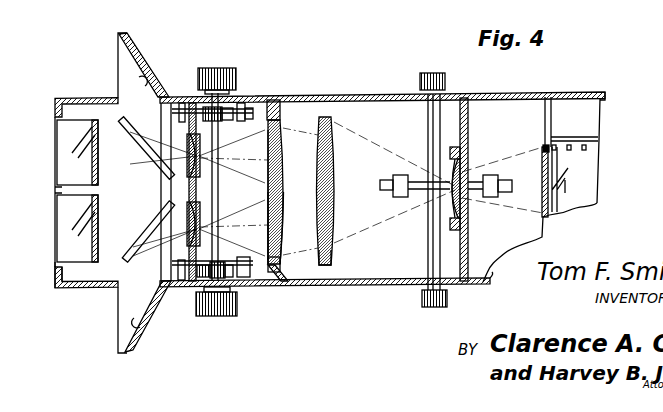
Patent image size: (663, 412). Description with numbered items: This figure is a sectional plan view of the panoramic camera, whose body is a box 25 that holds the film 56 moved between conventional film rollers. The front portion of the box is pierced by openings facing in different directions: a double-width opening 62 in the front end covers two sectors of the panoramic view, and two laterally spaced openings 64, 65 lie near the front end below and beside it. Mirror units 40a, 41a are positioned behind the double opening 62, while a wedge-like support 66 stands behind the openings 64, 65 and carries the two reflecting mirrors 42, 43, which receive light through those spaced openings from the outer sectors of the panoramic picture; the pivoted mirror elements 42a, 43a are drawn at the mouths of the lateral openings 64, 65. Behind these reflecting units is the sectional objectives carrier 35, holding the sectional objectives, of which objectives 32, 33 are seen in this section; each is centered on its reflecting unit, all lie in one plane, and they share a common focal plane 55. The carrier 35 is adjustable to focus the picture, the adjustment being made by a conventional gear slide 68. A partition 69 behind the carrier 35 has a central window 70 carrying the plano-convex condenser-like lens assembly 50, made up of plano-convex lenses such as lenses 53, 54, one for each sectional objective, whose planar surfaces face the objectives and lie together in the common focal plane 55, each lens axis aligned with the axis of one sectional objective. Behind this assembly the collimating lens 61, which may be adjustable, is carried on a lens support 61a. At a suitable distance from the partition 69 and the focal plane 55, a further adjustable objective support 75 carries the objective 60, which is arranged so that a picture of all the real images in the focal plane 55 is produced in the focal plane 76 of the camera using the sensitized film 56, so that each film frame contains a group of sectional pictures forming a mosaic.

The box 25 is at (349, 93).
The sectional objective 32 is at (198, 155).
The sectional objective 33 is at (198, 230).
The sectional objectives carrier 35 is at (193, 276).
The mirror unit 40a is at (68, 157).
The mirror unit 41a is at (68, 223).
The reflecting mirror 42 is at (132, 132).
The upper pivoted mirror 42a is at (143, 67).
The reflecting mirror 43 is at (136, 246).
The lower pivoted mirror 43a is at (135, 348).
The plano-convex condenser-like lens assembly 50 is at (284, 122).
The plano-convex lens 53 is at (278, 157).
The plano-convex lens 54 is at (279, 232).
The common focal plane 55 is at (268, 195).
The film 56 is at (586, 190).
The objective 60 is at (462, 176).
The collimating lens 61 is at (334, 167).
The lens support 61a is at (331, 259).
The opening 62 is at (61, 265).
The opening 64 is at (127, 74).
The opening 65 is at (127, 316).
The wedge-like support 66 is at (167, 97).
The gear slide 68 is at (216, 270).
The partition 69 is at (278, 270).
The central opening or window 70 is at (279, 256).
The adjustable objective support 75 is at (469, 123).
The focal plane 76 is at (543, 208).